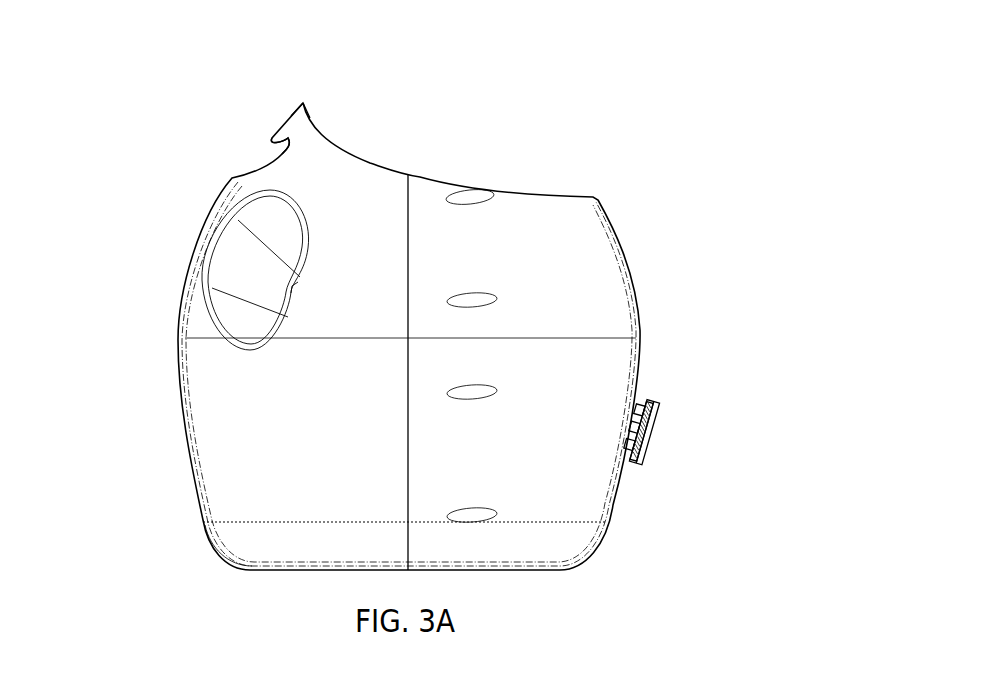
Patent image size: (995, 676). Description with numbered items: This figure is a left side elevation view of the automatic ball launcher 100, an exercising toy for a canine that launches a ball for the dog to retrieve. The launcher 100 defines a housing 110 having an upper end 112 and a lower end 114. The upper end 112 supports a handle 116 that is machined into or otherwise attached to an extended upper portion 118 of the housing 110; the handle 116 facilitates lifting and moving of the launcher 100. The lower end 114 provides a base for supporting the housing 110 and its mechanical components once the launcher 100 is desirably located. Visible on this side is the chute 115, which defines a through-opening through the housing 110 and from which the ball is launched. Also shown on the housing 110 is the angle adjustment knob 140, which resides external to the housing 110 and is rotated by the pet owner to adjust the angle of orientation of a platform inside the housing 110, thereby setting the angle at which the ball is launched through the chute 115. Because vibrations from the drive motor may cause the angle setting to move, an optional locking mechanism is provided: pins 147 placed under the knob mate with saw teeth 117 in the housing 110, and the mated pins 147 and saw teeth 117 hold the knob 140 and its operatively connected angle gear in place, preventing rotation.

The automatic ball launcher 100 is at (792, 139).
The housing 110 is at (316, 453).
The upper end 112 is at (593, 248).
The lower end 114 is at (240, 550).
The chute 115 is at (217, 305).
The handle 116 is at (268, 143).
The saw teeth 117 is at (630, 440).
The extended upper portion 118 is at (302, 109).
The angle adjustment knob 140 is at (660, 419).
The pins 147 is at (648, 397).